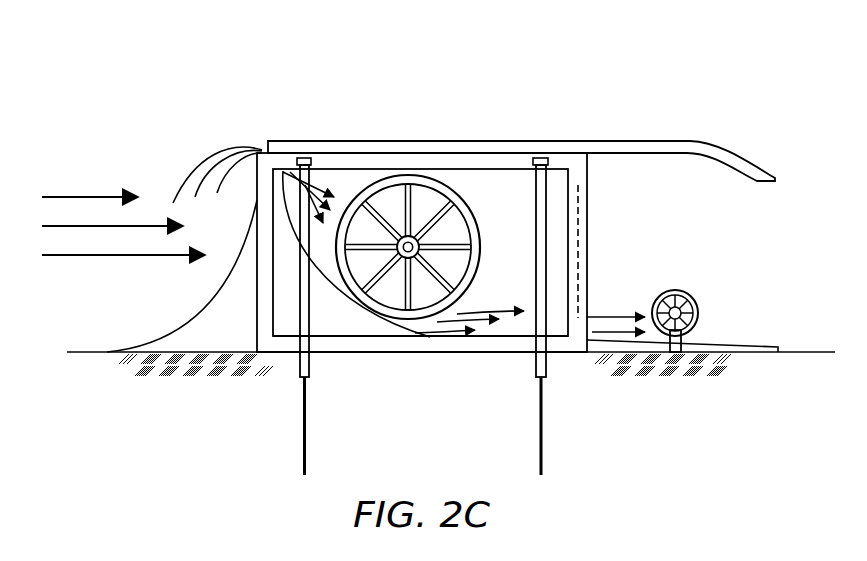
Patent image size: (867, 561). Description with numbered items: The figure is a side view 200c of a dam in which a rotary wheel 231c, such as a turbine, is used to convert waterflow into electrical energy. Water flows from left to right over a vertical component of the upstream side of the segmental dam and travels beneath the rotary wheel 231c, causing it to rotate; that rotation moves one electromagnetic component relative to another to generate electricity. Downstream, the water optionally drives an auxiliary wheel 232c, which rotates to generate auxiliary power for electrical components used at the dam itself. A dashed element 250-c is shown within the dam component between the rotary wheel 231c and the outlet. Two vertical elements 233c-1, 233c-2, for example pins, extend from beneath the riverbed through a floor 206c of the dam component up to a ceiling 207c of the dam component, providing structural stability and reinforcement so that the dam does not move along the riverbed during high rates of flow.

The side view 200c is at (357, 78).
The floor 206c is at (397, 345).
The ceiling 207c is at (638, 140).
The rotary wheel 231c is at (447, 180).
The screen 250-c is at (587, 227).
The auxiliary wheel 232c is at (685, 293).
The vertical element 233c-1 is at (303, 428).
The vertical element 233c-2 is at (543, 428).